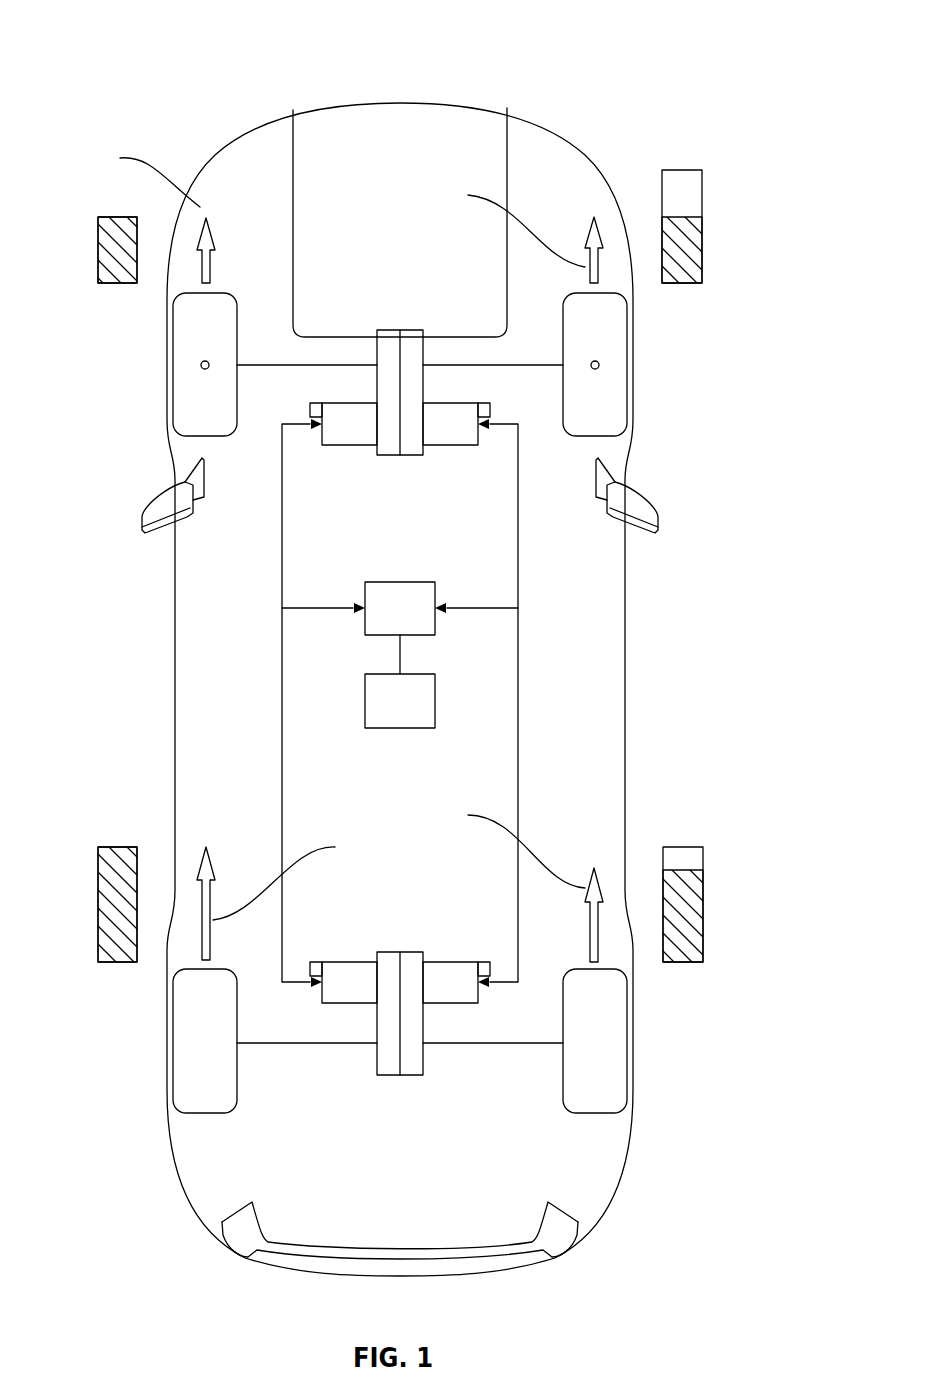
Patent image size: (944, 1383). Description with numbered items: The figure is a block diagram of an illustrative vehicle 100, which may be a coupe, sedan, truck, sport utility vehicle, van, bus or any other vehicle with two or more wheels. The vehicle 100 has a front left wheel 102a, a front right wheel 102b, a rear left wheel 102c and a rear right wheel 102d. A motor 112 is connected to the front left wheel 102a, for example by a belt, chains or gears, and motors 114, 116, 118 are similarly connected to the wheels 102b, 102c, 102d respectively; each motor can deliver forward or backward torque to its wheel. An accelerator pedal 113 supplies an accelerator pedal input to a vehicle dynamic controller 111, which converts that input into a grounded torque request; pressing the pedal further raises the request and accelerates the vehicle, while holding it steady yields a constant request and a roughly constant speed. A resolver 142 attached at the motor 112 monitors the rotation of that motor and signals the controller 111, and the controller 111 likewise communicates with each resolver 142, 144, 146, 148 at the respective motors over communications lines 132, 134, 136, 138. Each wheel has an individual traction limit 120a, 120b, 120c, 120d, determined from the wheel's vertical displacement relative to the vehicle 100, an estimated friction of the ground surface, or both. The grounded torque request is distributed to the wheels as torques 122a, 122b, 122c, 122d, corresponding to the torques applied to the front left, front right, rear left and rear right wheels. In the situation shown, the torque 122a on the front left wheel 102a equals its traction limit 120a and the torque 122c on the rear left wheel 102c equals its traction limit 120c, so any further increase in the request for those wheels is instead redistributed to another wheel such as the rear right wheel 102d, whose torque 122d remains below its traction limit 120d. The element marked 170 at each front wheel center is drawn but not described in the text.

The vehicle 100 is at (118, 28).
The front left wheel 102a is at (175, 400).
The front right wheel 102b is at (627, 400).
The rear left wheel 102c is at (175, 1030).
The rear right wheel 102d is at (627, 1040).
The vehicle dynamic controller 111 is at (400, 582).
The accelerator pedal 113 is at (385, 674).
The motor 112 is at (365, 446).
The motor 114 is at (437, 446).
The motor 116 is at (365, 1004).
The motor 118 is at (437, 1004).
The traction limit 120a is at (105, 217).
The traction limit 120b is at (695, 170).
The traction limit 120c is at (105, 847).
The traction limit 120d is at (695, 847).
The torque 122a is at (98, 218).
The torque 122b is at (703, 218).
The torque 122c is at (98, 850).
The torque 122d is at (703, 872).
The communications line 132 is at (282, 515).
The communications line 134 is at (518, 515).
The communications line 136 is at (282, 700).
The communications line 138 is at (518, 700).
The resolver 142 is at (318, 403).
The resolver 144 is at (482, 403).
The resolver 146 is at (318, 962).
The resolver 148 is at (482, 962).
The wheel center / steering axis 170 is at (200, 364).